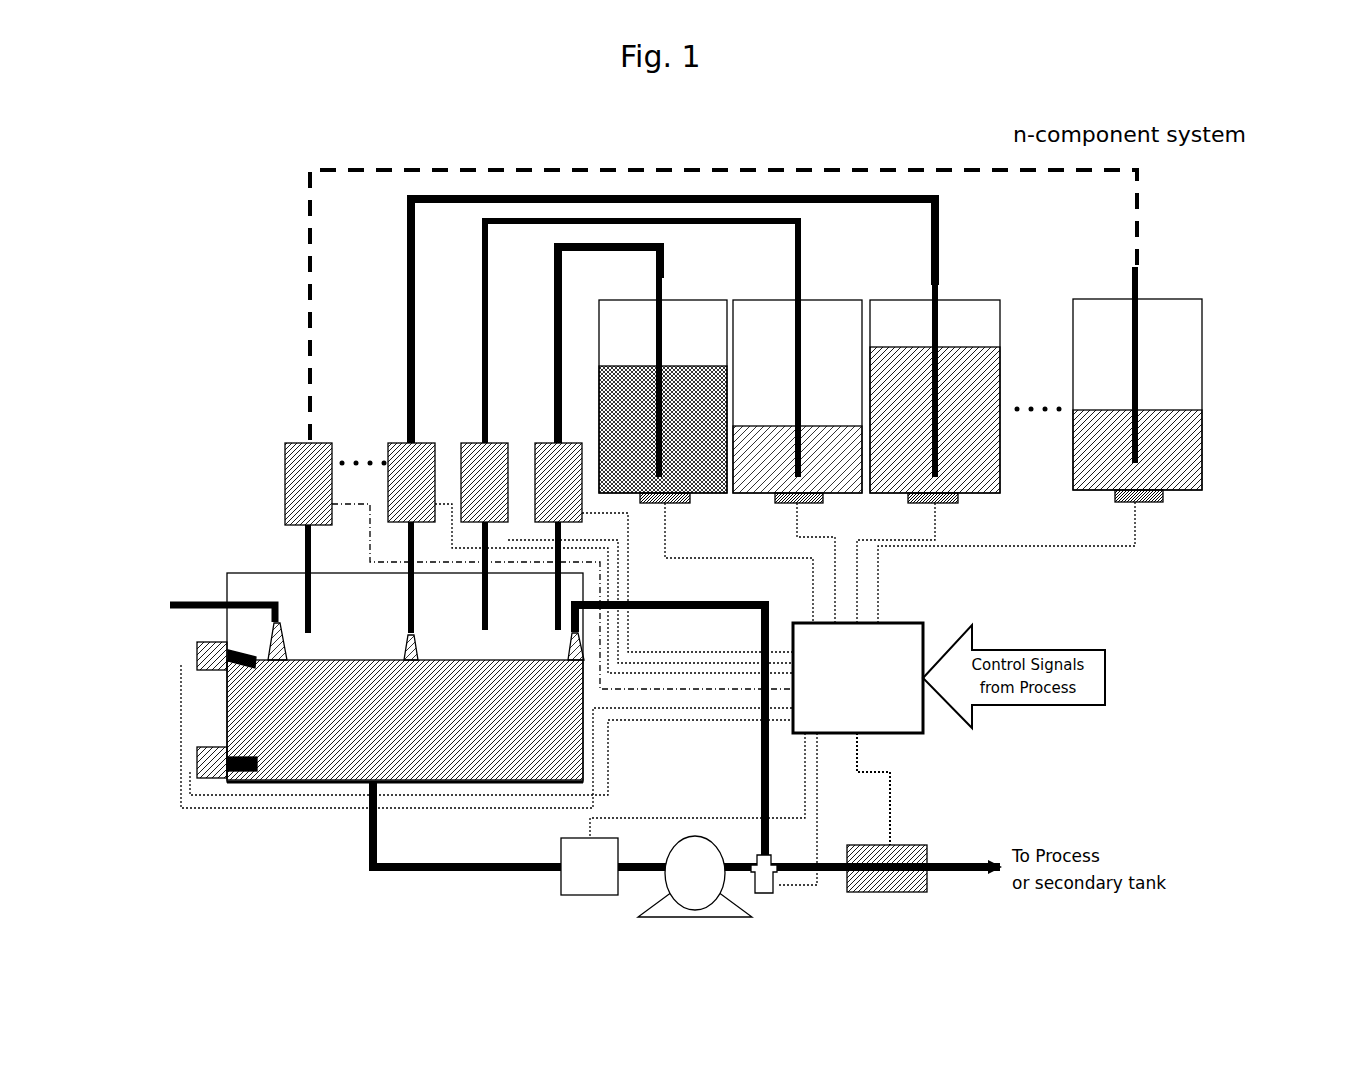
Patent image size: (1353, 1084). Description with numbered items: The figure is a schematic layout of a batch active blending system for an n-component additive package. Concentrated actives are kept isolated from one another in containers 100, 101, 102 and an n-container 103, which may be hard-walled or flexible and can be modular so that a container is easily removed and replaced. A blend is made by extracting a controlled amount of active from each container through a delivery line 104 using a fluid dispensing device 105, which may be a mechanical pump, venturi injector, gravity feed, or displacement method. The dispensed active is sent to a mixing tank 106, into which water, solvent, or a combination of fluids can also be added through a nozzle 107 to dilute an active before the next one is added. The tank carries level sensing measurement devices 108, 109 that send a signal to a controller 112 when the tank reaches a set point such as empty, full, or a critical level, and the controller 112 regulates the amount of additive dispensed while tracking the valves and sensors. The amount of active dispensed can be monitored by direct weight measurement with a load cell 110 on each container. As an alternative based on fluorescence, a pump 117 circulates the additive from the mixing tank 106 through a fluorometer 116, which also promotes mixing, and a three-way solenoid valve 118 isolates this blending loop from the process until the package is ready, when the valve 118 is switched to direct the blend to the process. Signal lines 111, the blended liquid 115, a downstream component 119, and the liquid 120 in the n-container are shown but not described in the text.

The container 100 is at (685, 300).
The container 101 is at (823, 300).
The container 102 is at (975, 300).
The n-container 103 is at (1192, 296).
The delivery line 104 is at (463, 195).
The fluid dispensing device 105 is at (296, 443).
The mixing tank 106 is at (258, 572).
The nozzle 107 is at (212, 603).
The level sensing measurement device 108 is at (195, 655).
The level sensing measurement device 109 is at (197, 760).
The load cell 110 is at (1142, 505).
The sensor signal lines 111 is at (918, 536).
The controller 112 is at (902, 735).
The mixed liquid 115 is at (338, 760).
The fluorometer 116 is at (595, 895).
The pump 117 is at (698, 903).
The three-way solenoid valve 118 is at (765, 897).
The flow meter 119 is at (875, 892).
The component liquid 120 is at (1177, 432).